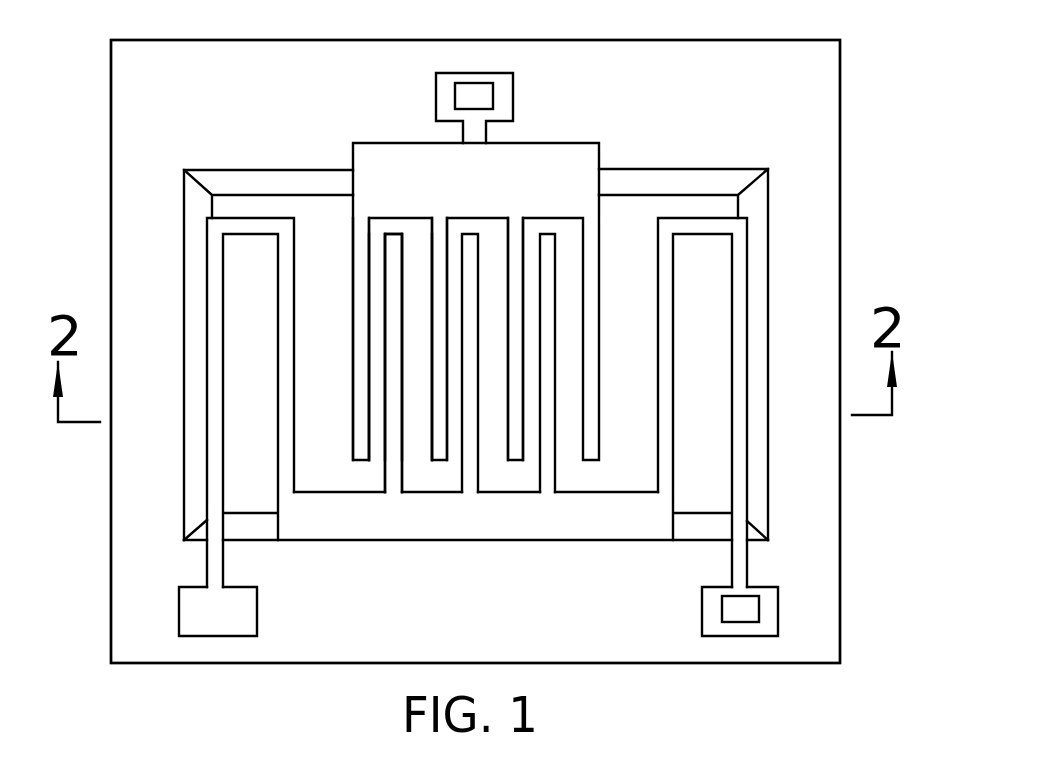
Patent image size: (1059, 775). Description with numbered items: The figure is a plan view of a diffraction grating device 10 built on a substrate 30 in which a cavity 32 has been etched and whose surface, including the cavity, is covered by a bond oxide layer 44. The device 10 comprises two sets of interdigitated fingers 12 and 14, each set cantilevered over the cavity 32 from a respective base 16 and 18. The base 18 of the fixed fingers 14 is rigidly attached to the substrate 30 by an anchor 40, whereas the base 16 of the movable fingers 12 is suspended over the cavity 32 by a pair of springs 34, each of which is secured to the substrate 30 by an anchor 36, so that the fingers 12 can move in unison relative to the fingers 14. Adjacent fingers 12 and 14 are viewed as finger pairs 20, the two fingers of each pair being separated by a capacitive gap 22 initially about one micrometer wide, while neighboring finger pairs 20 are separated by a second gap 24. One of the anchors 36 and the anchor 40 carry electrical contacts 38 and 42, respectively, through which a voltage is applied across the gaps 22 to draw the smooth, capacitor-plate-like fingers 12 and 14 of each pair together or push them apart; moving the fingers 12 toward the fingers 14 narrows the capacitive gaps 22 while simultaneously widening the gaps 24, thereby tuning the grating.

The diffraction grating device 10 is at (140, 158).
The movable fingers 12 is at (545, 465).
The fixed fingers 14 is at (517, 289).
The base 16 is at (363, 525).
The base 18 is at (392, 198).
The finger pairs 20 is at (392, 315).
The capacitive gap 22 is at (378, 337).
The second gap 24 is at (417, 372).
The substrate 30 is at (705, 63).
The cavity 32 is at (632, 218).
The springs 34 is at (282, 303).
The anchor 36 is at (213, 578).
The electrical contact 38 is at (728, 612).
The anchor 40 is at (440, 110).
The electrical contact 42 is at (487, 98).
The bond oxide layer 44 is at (345, 655).